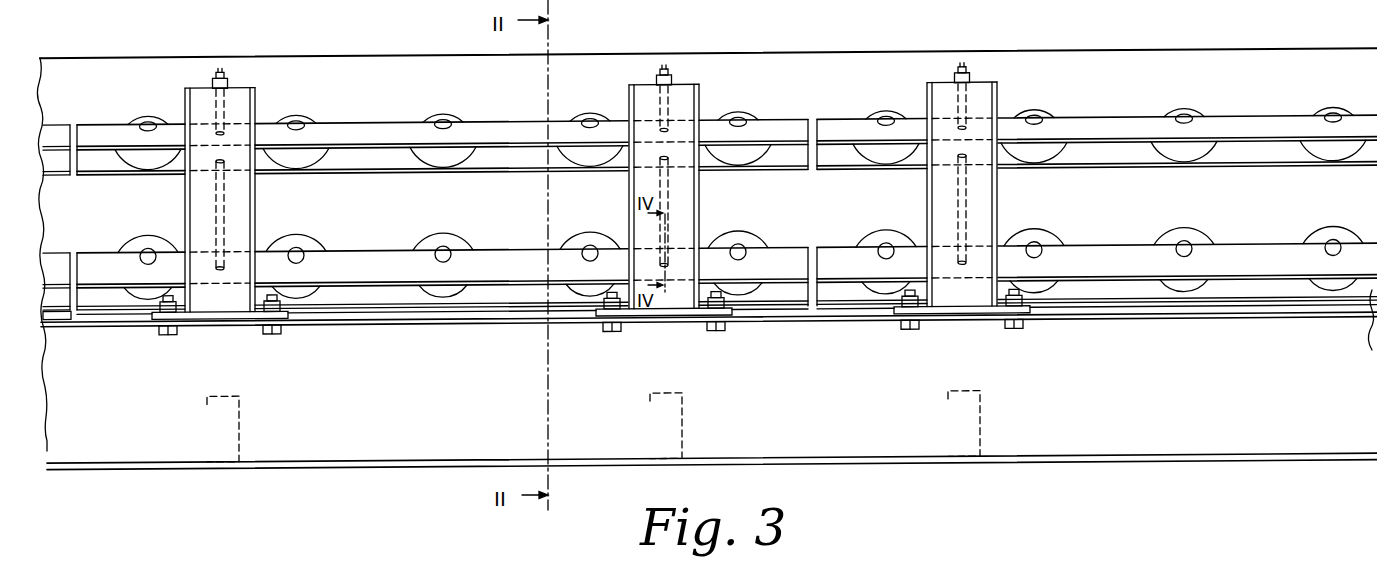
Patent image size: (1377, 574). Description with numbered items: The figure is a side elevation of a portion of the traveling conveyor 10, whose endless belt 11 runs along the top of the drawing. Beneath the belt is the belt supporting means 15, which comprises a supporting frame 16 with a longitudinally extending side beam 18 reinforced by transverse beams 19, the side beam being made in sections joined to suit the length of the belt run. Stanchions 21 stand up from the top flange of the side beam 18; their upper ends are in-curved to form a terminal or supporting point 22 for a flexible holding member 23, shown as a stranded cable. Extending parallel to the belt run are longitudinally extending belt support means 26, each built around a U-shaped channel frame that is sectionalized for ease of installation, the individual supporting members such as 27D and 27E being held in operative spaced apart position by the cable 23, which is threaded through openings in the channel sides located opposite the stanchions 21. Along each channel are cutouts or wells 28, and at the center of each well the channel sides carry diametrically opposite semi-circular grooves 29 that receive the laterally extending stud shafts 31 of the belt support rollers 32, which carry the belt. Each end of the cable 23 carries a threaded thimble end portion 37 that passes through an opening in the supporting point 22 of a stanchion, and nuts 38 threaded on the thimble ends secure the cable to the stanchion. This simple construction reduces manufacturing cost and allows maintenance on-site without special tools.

The traveling conveyor 10 is at (904, 41).
The endless belt 11 is at (370, 57).
The belt supporting means 15 is at (477, 326).
The supporting frame 16 is at (402, 467).
The side beam 18 is at (123, 457).
The transverse beam 19 is at (242, 436).
The stanchion 21 is at (248, 230).
The terminal or supporting point 22 is at (236, 89).
The flexible holding member 23 is at (215, 197).
The belt support means 26 is at (389, 111).
The supporting member 27D is at (362, 298).
The supporting member 27E is at (395, 166).
The well 28 is at (465, 247).
The semi-circular groove 29 is at (453, 258).
The stud shaft 31 is at (445, 122).
The belt support roller 32 is at (435, 163).
The threaded thimble end portion 37 is at (222, 73).
The nut 38 is at (211, 82).